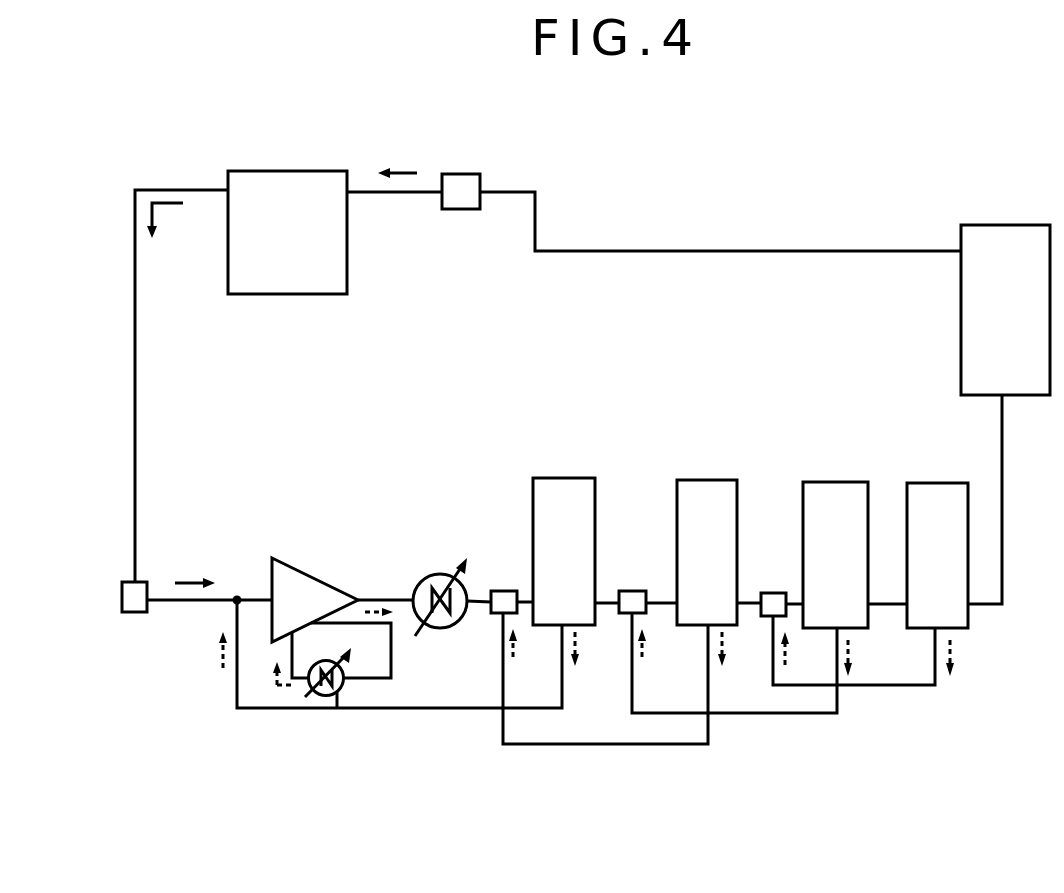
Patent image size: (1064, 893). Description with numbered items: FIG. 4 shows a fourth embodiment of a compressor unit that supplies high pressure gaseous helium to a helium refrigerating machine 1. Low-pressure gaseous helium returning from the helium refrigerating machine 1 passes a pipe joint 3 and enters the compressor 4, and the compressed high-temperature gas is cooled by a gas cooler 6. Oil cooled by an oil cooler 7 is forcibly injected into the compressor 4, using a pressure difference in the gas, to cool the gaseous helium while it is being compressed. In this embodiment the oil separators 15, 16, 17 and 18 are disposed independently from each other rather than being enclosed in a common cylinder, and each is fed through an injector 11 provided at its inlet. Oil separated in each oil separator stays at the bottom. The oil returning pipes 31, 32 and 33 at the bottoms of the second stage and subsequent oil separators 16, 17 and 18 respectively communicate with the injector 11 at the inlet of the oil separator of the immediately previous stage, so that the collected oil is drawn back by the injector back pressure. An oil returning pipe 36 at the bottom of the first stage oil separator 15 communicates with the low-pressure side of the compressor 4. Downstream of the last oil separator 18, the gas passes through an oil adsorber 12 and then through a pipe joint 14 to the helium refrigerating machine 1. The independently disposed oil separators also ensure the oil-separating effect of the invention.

The helium refrigerating machine 1 is at (292, 170).
The pipe joint 3 is at (135, 612).
The compressor 4 is at (310, 573).
The gas cooler 6 is at (430, 573).
The oil cooler 7 is at (337, 708).
The injector 11 is at (504, 591).
The oil adsorber 12 is at (990, 225).
The pipe joint 14 is at (460, 174).
The oil separator 15 is at (555, 478).
The oil separator 16 is at (693, 480).
The oil separator 17 is at (822, 482).
The oil separator 18 is at (930, 483).
The oil returning pipe 31 is at (618, 744).
The oil returning pipe 32 is at (775, 713).
The oil returning pipe 33 is at (897, 685).
The oil returning pipe 36 is at (413, 708).